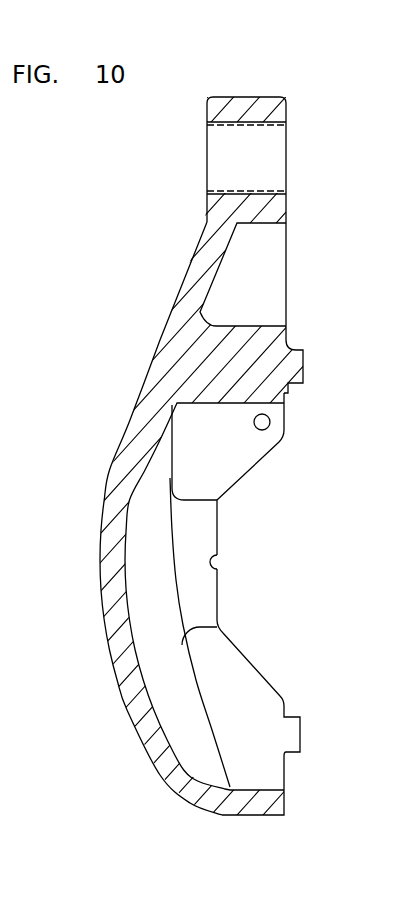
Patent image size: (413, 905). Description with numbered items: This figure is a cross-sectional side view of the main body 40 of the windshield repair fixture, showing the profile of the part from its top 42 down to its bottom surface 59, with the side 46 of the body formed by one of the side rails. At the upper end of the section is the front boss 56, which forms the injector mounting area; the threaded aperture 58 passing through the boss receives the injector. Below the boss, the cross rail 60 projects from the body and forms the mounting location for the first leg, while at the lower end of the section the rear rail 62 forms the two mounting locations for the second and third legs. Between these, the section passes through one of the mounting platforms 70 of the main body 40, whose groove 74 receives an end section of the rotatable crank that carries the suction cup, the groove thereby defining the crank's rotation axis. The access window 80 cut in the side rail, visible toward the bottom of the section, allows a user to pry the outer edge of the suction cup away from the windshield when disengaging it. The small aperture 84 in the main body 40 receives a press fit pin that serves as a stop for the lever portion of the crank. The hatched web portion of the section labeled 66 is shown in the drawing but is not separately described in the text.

The main body 40 is at (123, 287).
The top 42 is at (98, 523).
The side 46 is at (142, 596).
The front boss 56 is at (278, 96).
The threaded aperture 58 is at (250, 125).
The bottom surface 59 is at (133, 630).
The cross rail 60 is at (305, 365).
The rear rail 62 is at (286, 803).
The rim band section 66 is at (153, 747).
The mounting platform 70 is at (219, 520).
The groove 74 is at (224, 562).
The access window 80 is at (268, 678).
The aperture 84 is at (269, 428).